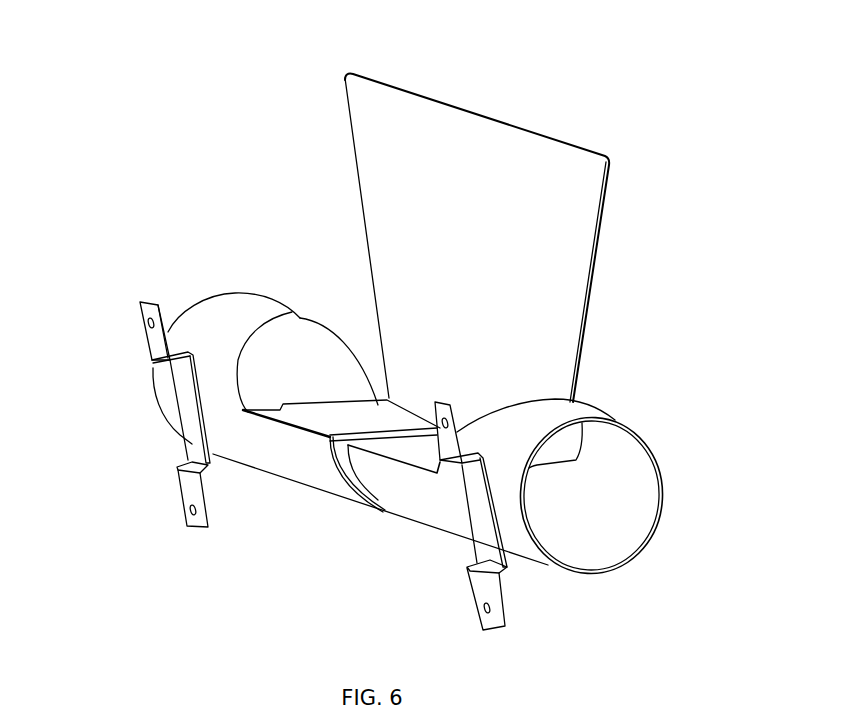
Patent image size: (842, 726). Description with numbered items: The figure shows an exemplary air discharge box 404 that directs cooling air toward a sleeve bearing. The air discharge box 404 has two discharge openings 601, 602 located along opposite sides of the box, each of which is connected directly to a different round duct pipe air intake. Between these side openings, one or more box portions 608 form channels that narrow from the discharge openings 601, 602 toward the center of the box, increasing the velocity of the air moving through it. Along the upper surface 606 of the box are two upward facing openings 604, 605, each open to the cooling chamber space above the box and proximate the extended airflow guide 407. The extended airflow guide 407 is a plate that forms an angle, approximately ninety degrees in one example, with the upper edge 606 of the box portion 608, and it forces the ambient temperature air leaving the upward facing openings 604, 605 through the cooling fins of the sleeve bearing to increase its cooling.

The air discharge box 404 is at (603, 118).
The extended airflow guide 407 is at (393, 157).
The discharge opening 601 is at (619, 531).
The discharge opening 602 is at (183, 315).
The upward facing opening 604 is at (377, 413).
The upward facing opening 605 is at (466, 428).
The upper surface 606 is at (414, 428).
The box portion 608 is at (290, 449).